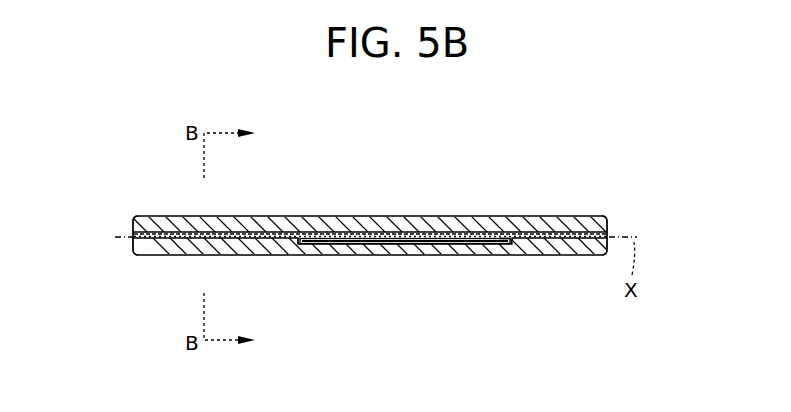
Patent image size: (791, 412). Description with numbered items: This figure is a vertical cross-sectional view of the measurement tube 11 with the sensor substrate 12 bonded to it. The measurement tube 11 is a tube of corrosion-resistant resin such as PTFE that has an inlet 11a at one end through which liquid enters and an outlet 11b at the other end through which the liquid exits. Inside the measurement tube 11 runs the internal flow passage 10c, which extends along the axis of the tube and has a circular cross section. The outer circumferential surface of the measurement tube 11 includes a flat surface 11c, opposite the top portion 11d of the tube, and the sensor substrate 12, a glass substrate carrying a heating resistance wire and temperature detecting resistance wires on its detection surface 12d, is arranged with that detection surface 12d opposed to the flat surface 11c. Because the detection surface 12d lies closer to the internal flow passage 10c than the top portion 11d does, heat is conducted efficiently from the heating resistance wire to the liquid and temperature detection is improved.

The measurement tube 11 is at (575, 257).
The inlet 11a is at (128, 220).
The outlet 11b is at (614, 223).
The flat surface 11c is at (352, 254).
The top portion 11d is at (472, 216).
The sensor substrate 12 is at (426, 255).
The detection surface 12d is at (512, 256).
The internal flow passage 10c is at (288, 248).